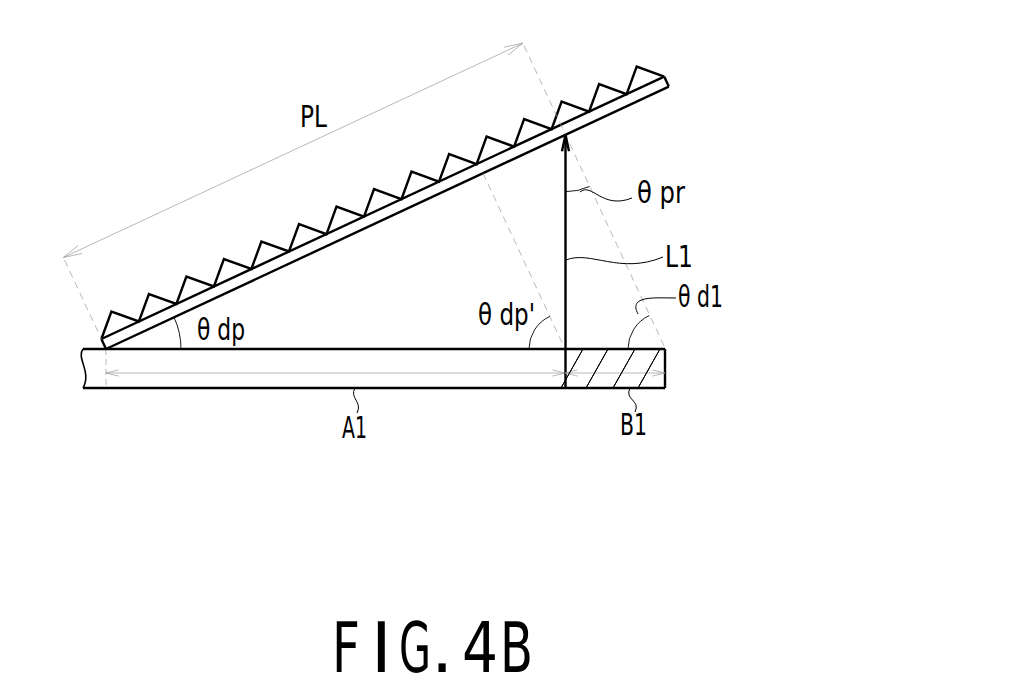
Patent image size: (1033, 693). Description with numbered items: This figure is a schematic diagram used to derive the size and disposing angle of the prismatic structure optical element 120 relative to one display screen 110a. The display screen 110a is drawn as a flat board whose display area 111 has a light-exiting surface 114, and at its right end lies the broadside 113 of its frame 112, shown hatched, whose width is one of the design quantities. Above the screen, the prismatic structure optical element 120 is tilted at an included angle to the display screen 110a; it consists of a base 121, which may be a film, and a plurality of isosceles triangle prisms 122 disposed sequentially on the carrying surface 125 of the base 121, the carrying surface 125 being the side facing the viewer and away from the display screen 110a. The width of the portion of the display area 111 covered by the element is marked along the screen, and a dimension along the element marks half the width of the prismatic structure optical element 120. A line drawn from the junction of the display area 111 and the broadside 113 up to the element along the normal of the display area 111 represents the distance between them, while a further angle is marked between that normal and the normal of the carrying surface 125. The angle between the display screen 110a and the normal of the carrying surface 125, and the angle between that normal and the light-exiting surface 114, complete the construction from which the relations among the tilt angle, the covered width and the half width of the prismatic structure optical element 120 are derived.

The display screen 110a is at (373, 408).
The display area 111 is at (437, 388).
The frame 112 is at (591, 423).
The broadside 113 is at (615, 388).
The light-exiting surface 114 is at (413, 349).
The prismatic structure optical element 120 is at (481, 205).
The base 121 is at (446, 213).
The prism 122 is at (664, 76).
The carrying surface 125 is at (612, 113).